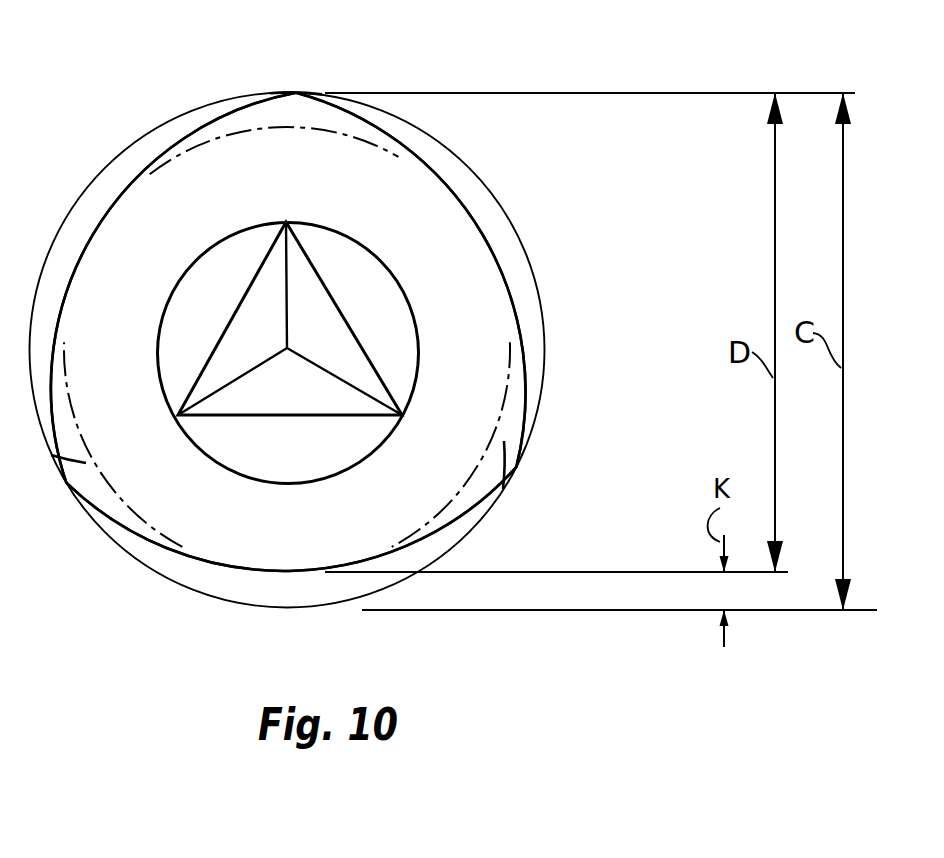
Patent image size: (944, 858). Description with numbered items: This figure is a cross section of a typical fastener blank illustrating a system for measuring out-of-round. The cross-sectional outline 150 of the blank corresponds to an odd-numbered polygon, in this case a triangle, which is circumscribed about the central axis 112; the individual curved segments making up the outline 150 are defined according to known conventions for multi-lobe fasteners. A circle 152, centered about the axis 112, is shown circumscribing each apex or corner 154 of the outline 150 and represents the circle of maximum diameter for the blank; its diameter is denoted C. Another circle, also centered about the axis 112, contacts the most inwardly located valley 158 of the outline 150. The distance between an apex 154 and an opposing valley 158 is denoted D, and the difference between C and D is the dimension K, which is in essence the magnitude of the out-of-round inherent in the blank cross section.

The central axis 112 is at (287, 348).
The cross-sectional outline 150 is at (514, 492).
The circle 152 is at (182, 110).
The apex 154 is at (297, 92).
The valley 158 is at (108, 215).